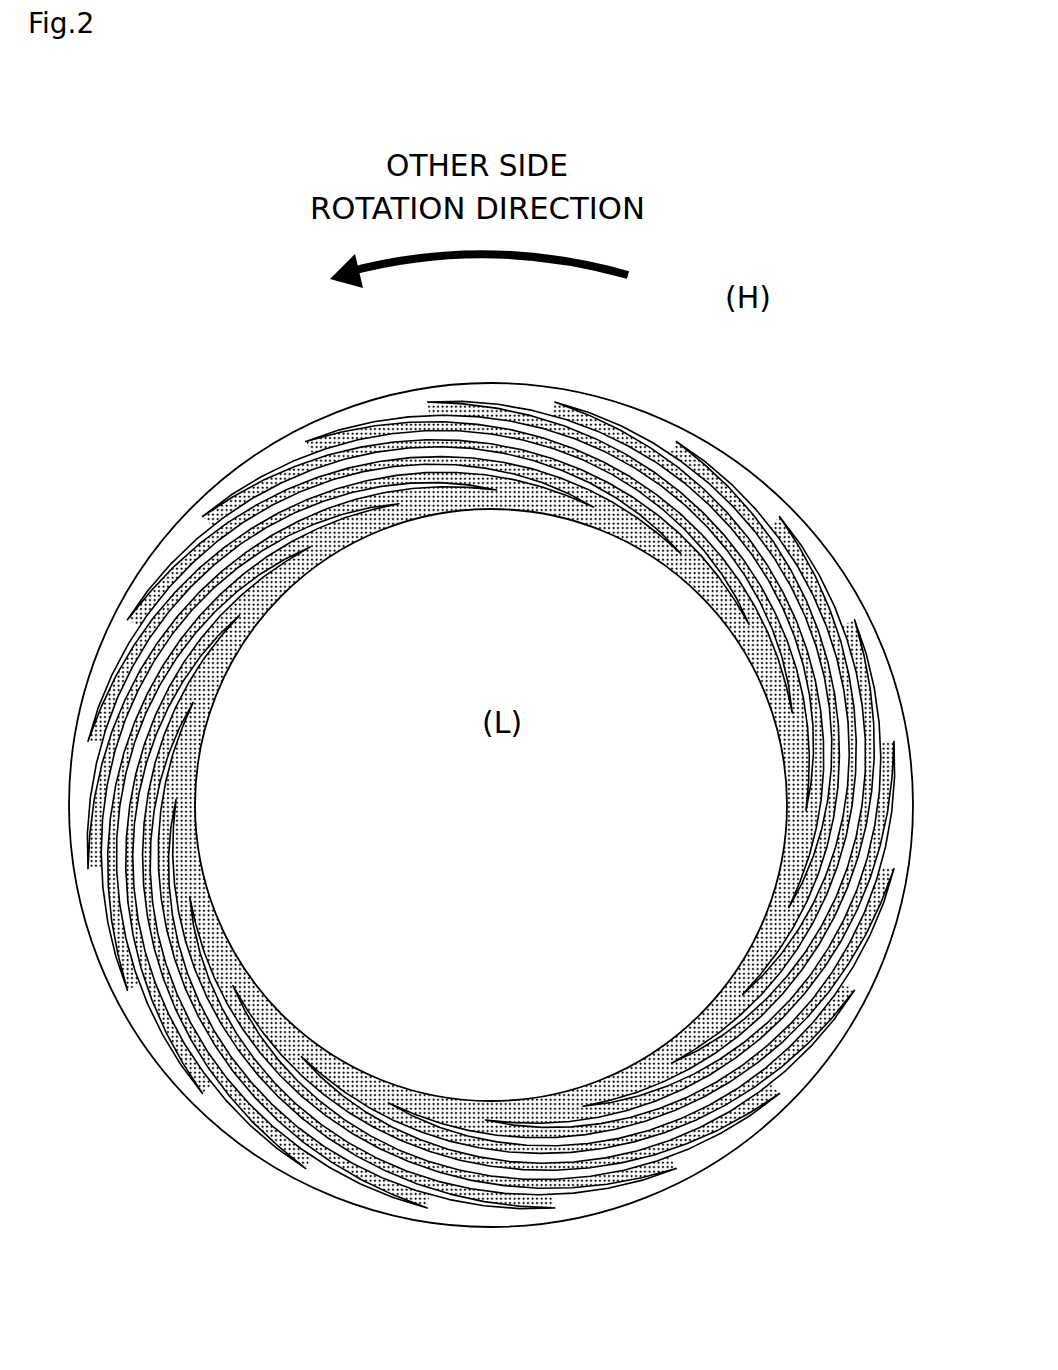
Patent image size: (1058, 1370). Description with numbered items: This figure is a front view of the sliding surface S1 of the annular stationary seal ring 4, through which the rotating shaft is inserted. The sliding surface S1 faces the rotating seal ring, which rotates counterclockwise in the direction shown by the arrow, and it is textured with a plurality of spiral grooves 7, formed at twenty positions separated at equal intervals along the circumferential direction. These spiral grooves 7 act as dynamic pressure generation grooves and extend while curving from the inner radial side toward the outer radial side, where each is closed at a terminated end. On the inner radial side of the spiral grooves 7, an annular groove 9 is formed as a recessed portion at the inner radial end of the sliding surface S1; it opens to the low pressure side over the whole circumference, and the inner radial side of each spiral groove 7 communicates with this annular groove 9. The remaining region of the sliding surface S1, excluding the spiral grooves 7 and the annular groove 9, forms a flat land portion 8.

The stationary seal ring 4 is at (727, 417).
The sliding surface S1 is at (333, 406).
The spiral grooves 7 is at (492, 402).
The land portion 8 is at (303, 441).
The annular groove 9 is at (445, 500).